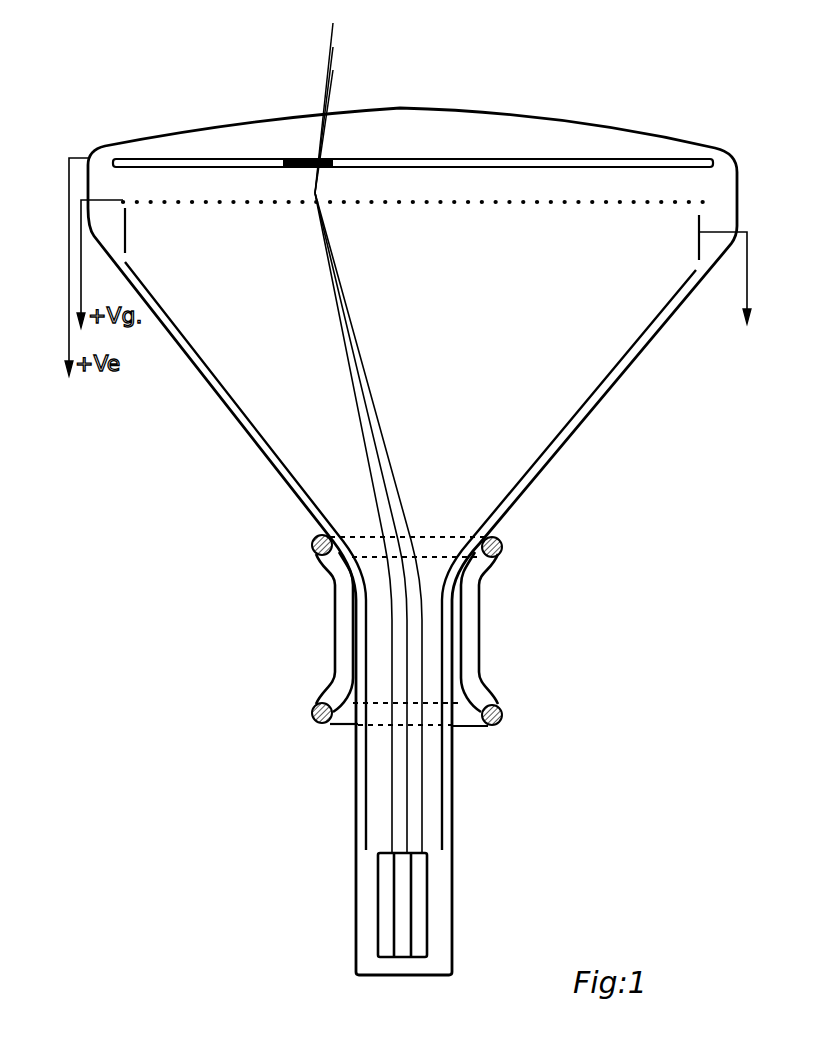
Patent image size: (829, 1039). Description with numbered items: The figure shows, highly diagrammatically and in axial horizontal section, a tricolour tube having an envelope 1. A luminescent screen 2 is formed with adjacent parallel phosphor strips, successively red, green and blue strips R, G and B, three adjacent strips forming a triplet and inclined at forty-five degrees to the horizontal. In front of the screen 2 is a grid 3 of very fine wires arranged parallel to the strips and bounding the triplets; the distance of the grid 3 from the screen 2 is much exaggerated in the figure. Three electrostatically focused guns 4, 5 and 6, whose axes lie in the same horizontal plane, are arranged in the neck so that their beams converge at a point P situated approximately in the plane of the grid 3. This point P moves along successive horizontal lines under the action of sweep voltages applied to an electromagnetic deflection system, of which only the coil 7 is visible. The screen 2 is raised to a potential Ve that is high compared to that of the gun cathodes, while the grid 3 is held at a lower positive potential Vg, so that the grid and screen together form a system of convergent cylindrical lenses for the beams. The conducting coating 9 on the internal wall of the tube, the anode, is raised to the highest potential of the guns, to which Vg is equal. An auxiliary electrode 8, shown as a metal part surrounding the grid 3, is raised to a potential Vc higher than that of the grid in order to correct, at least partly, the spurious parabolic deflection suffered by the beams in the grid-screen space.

The envelope 1 is at (478, 112).
The luminescent screen 2 is at (528, 160).
The grid 3 is at (613, 202).
The electrostatically focused gun 4 is at (393, 875).
The electrostatically focused gun 5 is at (408, 918).
The electrostatically focused gun 6 is at (422, 947).
The coil 7 is at (348, 628).
The auxiliary electrode 8 is at (731, 283).
The conducting coating 9 is at (600, 397).
The blue phosphor strip B is at (332, 100).
The green phosphor strip G is at (333, 114).
The red phosphor strip R is at (332, 125).
The convergence point P is at (360, 523).